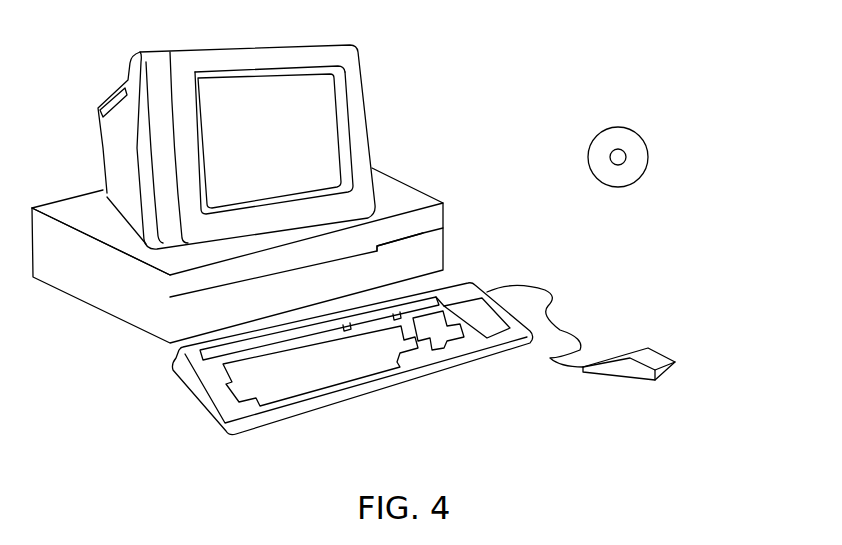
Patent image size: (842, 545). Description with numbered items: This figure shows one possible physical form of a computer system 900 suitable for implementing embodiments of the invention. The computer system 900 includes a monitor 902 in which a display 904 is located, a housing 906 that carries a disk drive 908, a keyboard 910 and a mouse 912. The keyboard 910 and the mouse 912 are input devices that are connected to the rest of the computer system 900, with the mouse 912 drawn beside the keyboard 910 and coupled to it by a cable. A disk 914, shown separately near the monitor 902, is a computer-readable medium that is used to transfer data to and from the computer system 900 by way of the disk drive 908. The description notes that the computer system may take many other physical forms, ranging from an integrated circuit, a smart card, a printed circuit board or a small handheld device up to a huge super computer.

The computer system 900 is at (545, 18).
The monitor 902 is at (281, 147).
The display 904 is at (333, 102).
The housing 906 is at (278, 274).
The disk drive 908 is at (423, 233).
The keyboard 910 is at (363, 393).
The mouse 912 is at (663, 350).
The disk 914 is at (634, 130).